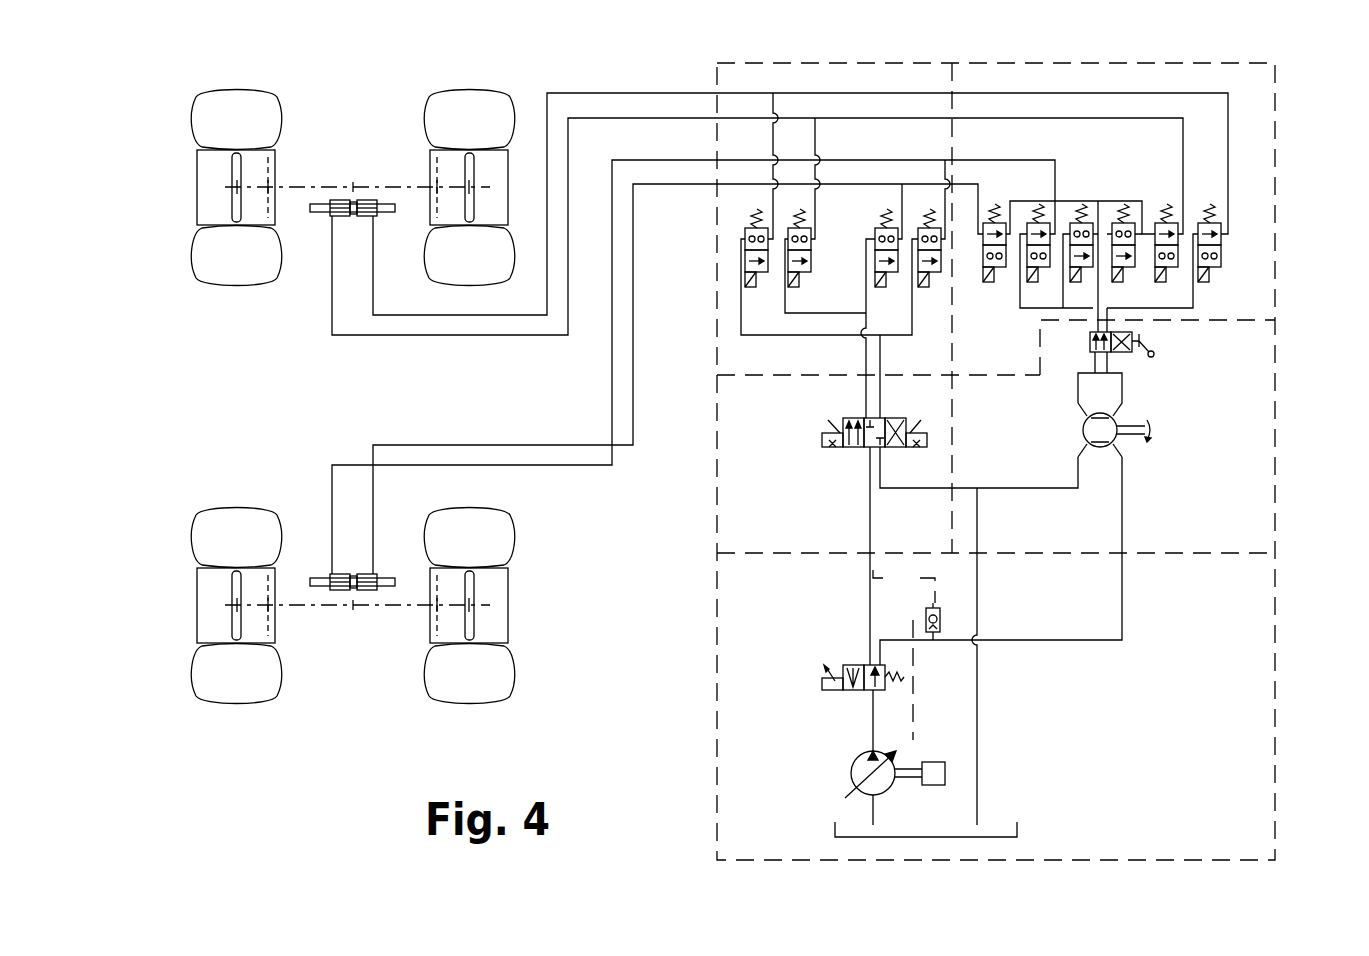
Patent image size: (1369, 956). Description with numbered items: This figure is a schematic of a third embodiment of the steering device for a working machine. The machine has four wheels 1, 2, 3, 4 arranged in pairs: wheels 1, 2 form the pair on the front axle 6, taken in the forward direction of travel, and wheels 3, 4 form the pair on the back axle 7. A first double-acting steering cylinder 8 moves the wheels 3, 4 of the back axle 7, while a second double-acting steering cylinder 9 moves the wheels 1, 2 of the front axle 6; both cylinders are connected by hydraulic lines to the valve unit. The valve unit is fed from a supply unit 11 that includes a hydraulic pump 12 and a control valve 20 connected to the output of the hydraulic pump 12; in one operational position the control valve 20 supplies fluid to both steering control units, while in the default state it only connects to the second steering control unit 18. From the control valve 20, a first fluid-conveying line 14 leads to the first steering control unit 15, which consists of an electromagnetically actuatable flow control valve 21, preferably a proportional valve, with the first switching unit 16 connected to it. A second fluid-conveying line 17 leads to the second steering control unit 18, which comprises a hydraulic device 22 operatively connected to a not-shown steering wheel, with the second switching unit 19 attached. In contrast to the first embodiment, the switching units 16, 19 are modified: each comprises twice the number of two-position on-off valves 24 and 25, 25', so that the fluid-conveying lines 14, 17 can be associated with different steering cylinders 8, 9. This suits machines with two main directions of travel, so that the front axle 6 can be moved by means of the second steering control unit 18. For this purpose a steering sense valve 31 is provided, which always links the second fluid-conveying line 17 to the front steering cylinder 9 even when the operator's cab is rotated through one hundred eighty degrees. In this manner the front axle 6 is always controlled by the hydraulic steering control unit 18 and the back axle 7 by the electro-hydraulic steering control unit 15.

The wheel 1 is at (195, 182).
The wheel 2 is at (428, 160).
The wheel 3 is at (195, 603).
The wheel 4 is at (428, 630).
The front axle 6 is at (305, 188).
The back axle 7 is at (310, 607).
The first double-acting steering cylinder 8 is at (370, 597).
The second double-acting steering cylinder 9 is at (365, 190).
The supply unit 11 is at (720, 838).
The hydraulic pump 12 is at (851, 765).
The first fluid-conveying line 14 is at (868, 590).
The first steering control unit 15 is at (717, 470).
The first switching unit 16 is at (717, 324).
The second fluid-conveying line 17 is at (1072, 642).
The second steering control unit 18 is at (1278, 465).
The second switching unit 19 is at (1278, 150).
The control valve 20 is at (853, 663).
The flow control valve 21 is at (852, 450).
The hydraulic device 22 is at (1120, 420).
The on-off valve 24 is at (744, 226).
The on-off valve 25 is at (1102, 221).
The on-off valve 25' is at (1142, 274).
The steering sense valve 31 is at (1132, 356).